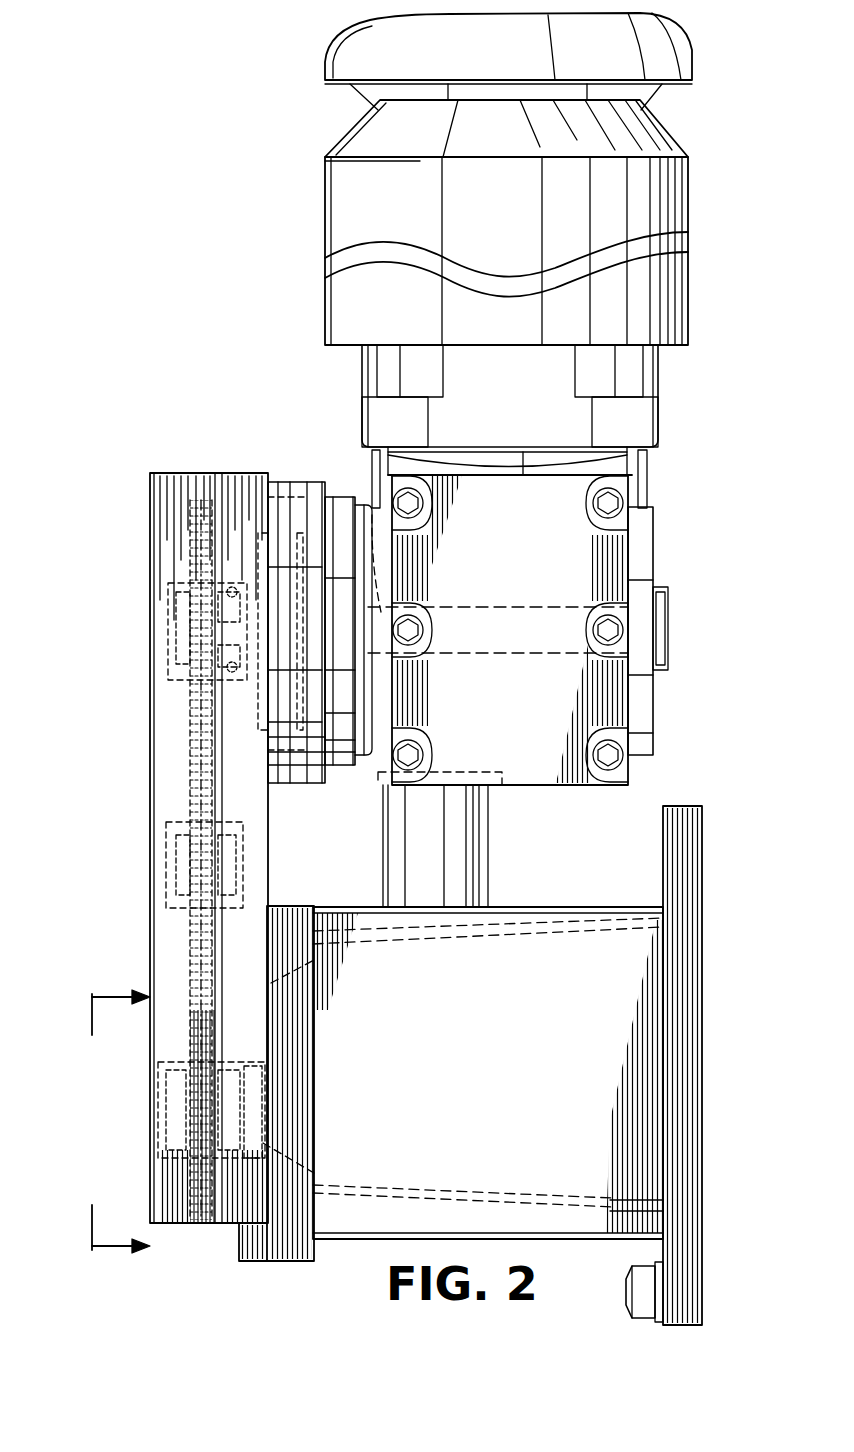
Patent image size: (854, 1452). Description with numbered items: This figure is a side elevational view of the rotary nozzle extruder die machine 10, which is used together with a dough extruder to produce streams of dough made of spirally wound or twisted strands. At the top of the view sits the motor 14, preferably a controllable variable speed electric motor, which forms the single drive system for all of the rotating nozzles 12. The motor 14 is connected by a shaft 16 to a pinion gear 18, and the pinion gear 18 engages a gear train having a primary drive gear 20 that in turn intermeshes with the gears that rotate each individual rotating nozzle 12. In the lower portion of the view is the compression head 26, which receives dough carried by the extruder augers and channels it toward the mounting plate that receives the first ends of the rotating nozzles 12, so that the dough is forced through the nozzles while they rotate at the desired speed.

The rotary nozzle extruder die machine 10 is at (212, 369).
The rotating nozzle 12 is at (162, 1112).
The motor 14 is at (337, 304).
The shaft 16 is at (370, 498).
The pinion gear 18 is at (200, 718).
The primary drive gear 20 is at (195, 955).
The compression head 26 is at (380, 1212).